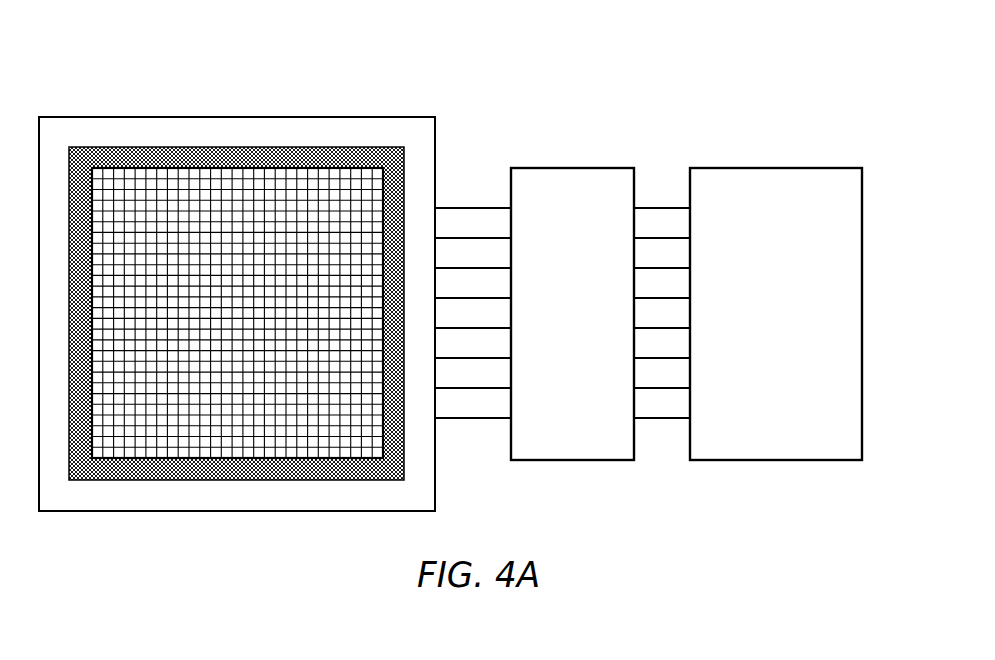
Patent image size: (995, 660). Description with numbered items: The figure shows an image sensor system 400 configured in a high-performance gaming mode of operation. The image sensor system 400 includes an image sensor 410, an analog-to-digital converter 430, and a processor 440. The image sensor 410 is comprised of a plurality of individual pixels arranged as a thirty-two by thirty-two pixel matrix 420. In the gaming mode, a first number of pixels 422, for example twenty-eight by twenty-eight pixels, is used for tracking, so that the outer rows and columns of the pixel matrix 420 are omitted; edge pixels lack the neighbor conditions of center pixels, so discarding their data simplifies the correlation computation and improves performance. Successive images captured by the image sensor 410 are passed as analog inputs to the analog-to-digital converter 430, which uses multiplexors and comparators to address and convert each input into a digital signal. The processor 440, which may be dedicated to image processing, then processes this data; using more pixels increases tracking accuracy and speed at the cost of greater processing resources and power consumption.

The image sensor system 400 is at (140, 52).
The image sensor 410 is at (262, 117).
The pixel matrix 420 is at (337, 147).
The first number of pixels 422 is at (118, 147).
The analog-to-digital (A/D) converter 430 is at (573, 168).
The processor 440 is at (785, 168).